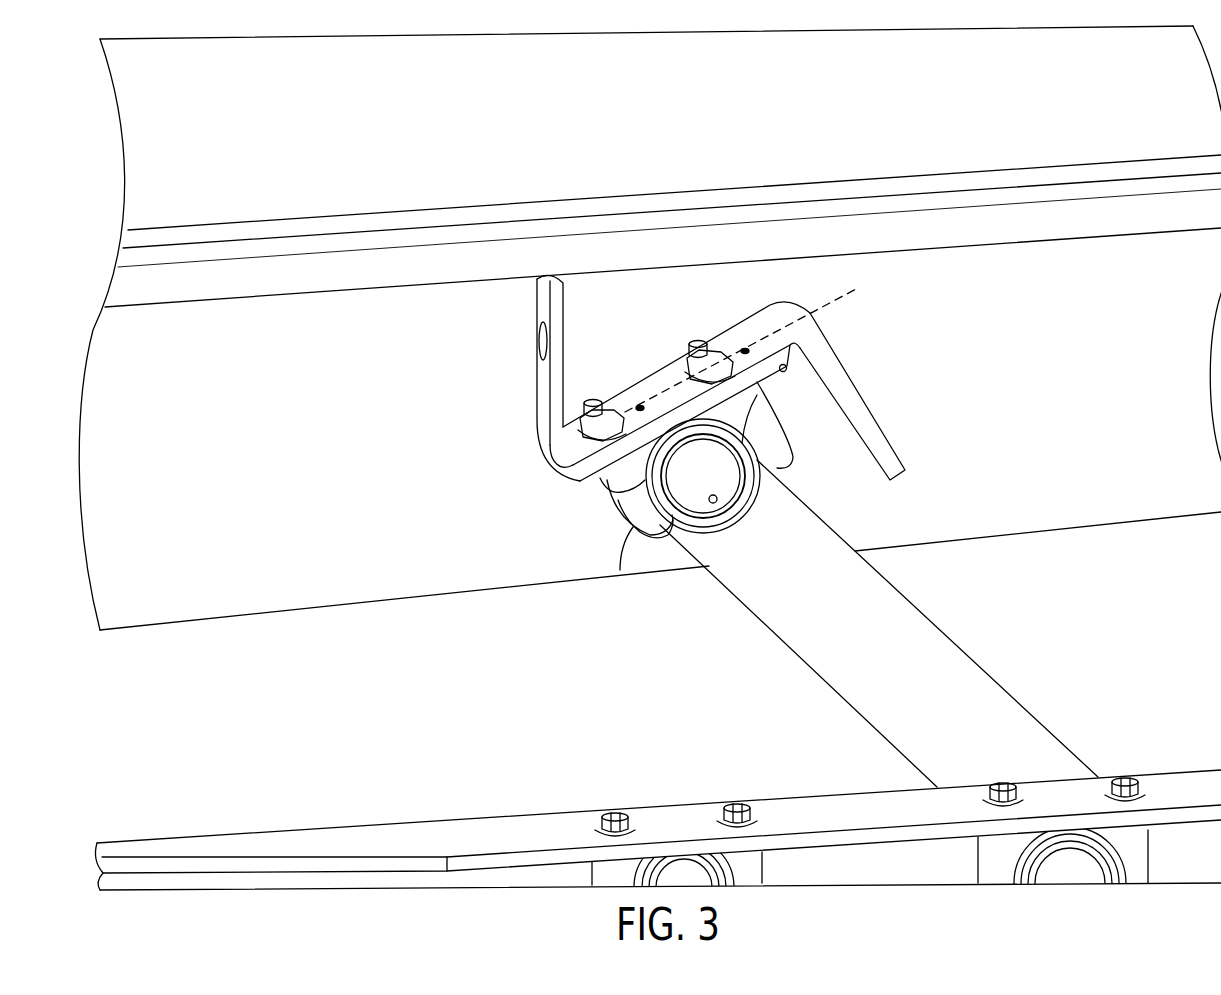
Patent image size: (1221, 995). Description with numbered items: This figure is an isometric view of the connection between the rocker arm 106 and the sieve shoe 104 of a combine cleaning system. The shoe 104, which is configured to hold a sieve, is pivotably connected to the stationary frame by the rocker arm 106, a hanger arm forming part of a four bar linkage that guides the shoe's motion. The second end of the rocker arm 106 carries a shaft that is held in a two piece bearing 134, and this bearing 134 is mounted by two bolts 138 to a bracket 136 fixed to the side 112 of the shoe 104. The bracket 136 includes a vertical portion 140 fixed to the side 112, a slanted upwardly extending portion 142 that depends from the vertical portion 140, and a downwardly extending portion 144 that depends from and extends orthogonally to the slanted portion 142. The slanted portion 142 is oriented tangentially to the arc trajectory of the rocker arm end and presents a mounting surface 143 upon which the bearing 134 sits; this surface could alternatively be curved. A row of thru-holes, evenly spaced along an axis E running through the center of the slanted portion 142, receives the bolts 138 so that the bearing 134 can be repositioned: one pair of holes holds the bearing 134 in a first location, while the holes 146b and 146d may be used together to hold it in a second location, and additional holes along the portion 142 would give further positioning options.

The sieve shoe 104 is at (381, 274).
The side of the shoe 112 is at (313, 597).
The bracket 136 is at (543, 392).
The vertical portion 140 is at (537, 318).
The bolts 138 is at (582, 426).
The slanted upwardly extending portion 142 is at (768, 326).
The downwardly extending portion 144 is at (890, 428).
The mounting surface 143 is at (786, 372).
The axis E is at (754, 340).
The thru-hole 146b is at (640, 412).
The thru-hole 146d is at (745, 355).
The two piece bearing 134 is at (637, 524).
The rocker arm 106 is at (897, 614).